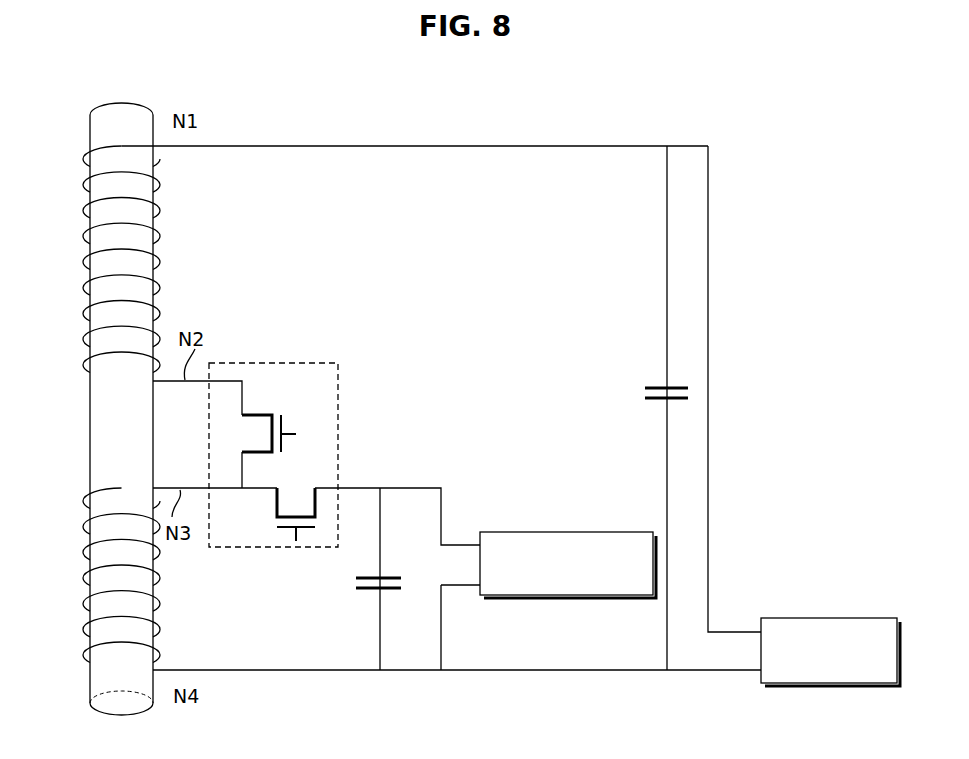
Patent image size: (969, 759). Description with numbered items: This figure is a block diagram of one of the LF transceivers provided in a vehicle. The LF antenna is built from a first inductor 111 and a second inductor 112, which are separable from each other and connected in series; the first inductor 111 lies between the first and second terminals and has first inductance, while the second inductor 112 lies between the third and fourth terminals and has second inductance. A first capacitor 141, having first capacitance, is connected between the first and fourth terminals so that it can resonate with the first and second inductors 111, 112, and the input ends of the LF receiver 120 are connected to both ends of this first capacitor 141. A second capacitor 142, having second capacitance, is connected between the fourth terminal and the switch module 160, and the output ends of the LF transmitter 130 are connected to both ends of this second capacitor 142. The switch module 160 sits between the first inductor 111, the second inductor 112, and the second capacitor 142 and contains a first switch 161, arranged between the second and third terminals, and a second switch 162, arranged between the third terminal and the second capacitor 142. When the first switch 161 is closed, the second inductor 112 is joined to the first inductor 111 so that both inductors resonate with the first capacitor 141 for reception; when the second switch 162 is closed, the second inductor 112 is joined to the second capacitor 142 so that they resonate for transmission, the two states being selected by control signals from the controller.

The first inductor 111 is at (88, 182).
The second inductor 112 is at (88, 628).
The LF receiver 120 is at (871, 618).
The LF transmitter 130 is at (628, 532).
The first capacitor 141 is at (655, 388).
The second capacitor 142 is at (365, 592).
The switch module 160 is at (299, 457).
The first switch 161 is at (284, 421).
The second switch 162 is at (285, 532).